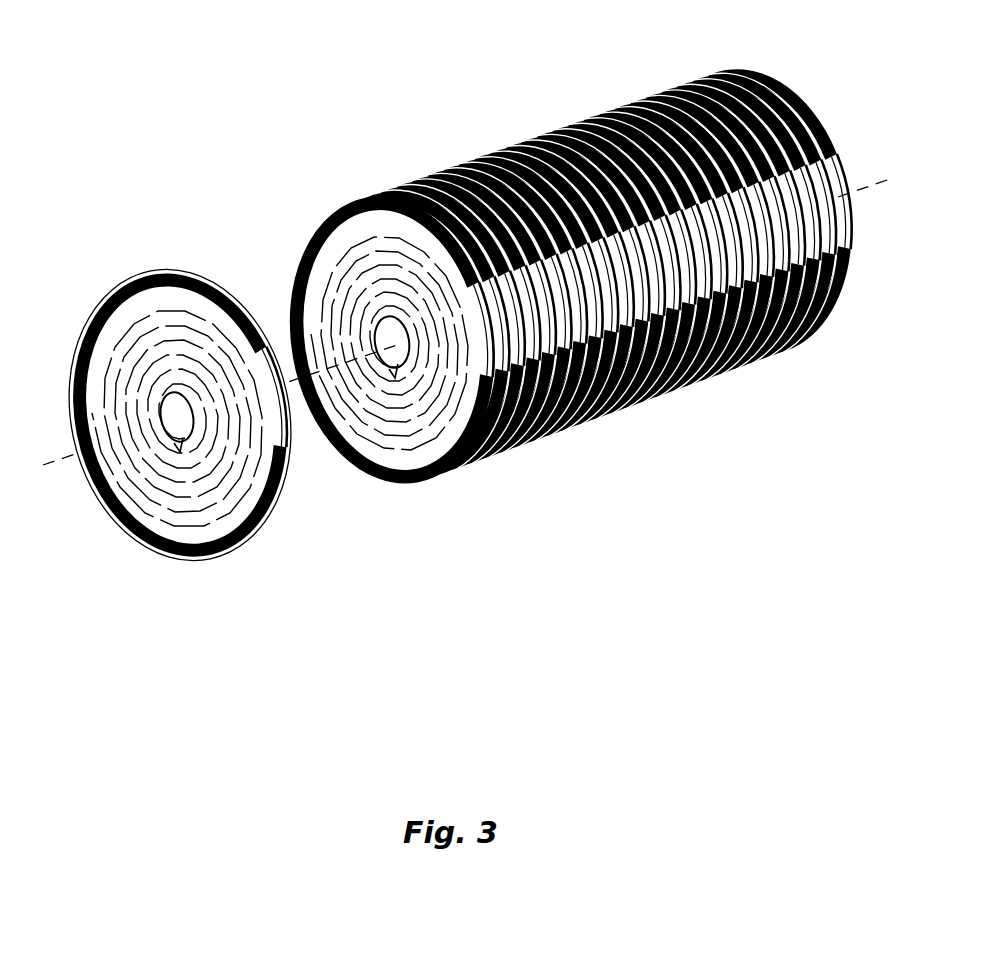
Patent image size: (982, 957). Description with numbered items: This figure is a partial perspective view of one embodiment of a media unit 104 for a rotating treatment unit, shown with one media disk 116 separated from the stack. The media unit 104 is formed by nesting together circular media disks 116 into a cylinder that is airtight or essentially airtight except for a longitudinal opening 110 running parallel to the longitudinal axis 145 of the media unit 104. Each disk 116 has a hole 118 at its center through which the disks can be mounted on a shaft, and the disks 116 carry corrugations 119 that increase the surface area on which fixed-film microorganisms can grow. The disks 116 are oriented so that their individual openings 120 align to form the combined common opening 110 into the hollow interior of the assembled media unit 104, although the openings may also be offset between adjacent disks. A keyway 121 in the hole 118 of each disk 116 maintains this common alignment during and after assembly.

The media unit 104 is at (487, 149).
The longitudinal opening 110 is at (842, 197).
The media disk 116 is at (69, 362).
The hole 118 is at (385, 316).
The corrugations 119 is at (192, 337).
The individual opening 120 is at (300, 428).
The keyway 121 is at (180, 457).
The longitudinal axis 145 is at (71, 457).